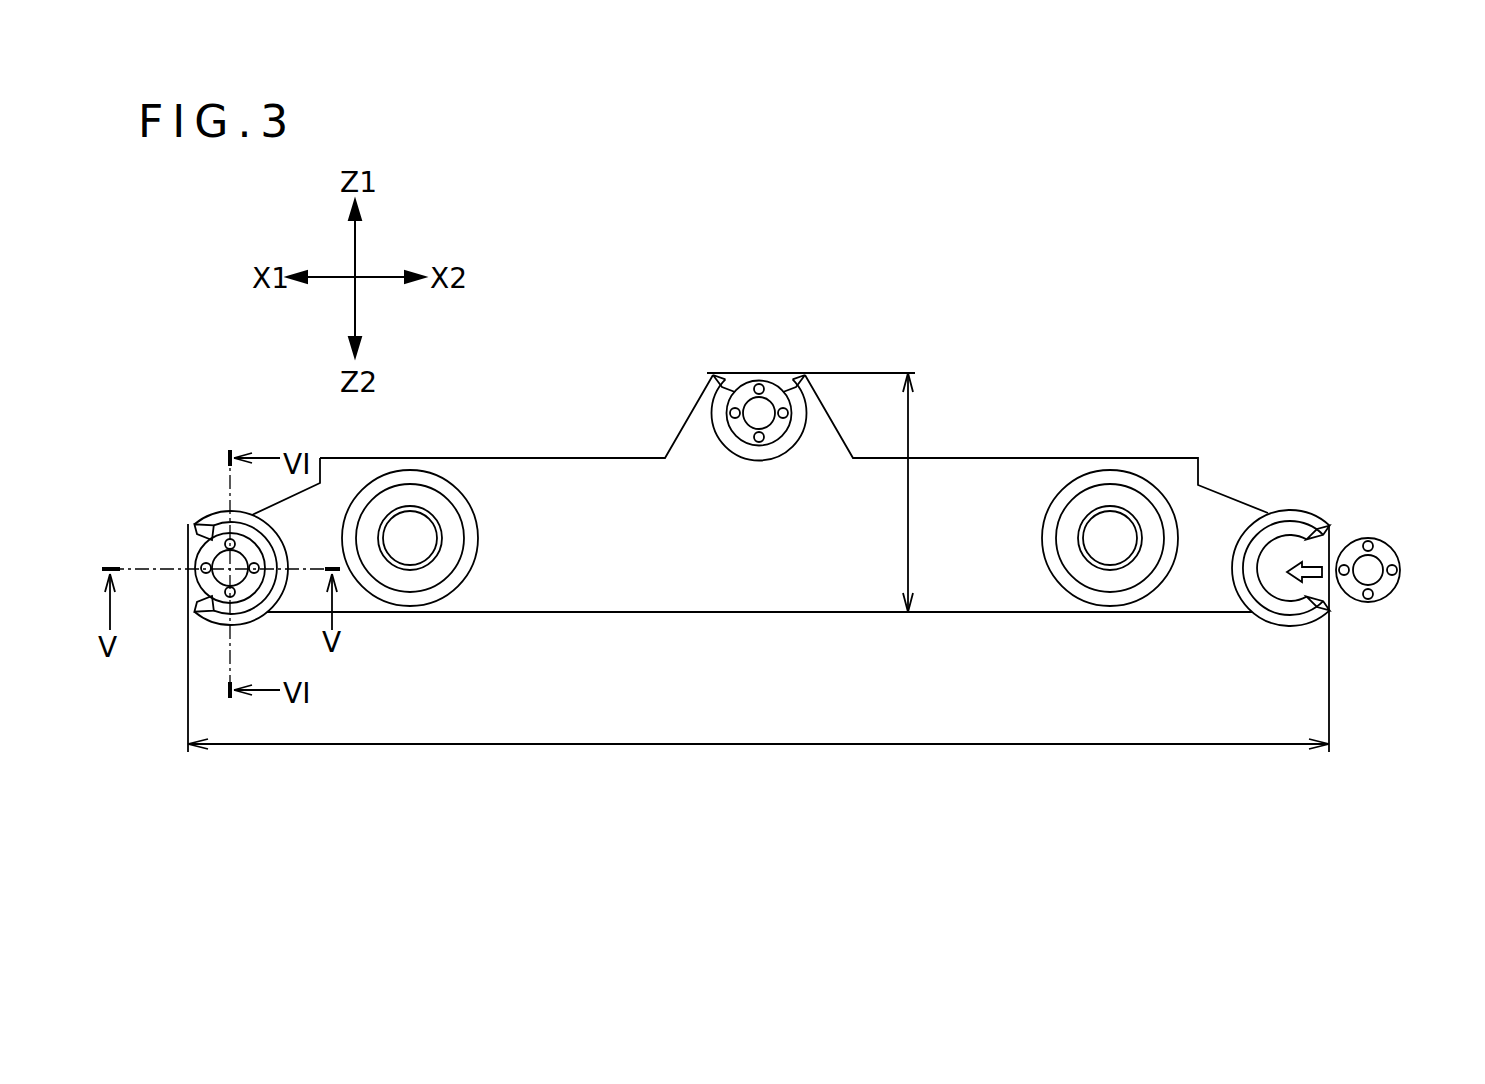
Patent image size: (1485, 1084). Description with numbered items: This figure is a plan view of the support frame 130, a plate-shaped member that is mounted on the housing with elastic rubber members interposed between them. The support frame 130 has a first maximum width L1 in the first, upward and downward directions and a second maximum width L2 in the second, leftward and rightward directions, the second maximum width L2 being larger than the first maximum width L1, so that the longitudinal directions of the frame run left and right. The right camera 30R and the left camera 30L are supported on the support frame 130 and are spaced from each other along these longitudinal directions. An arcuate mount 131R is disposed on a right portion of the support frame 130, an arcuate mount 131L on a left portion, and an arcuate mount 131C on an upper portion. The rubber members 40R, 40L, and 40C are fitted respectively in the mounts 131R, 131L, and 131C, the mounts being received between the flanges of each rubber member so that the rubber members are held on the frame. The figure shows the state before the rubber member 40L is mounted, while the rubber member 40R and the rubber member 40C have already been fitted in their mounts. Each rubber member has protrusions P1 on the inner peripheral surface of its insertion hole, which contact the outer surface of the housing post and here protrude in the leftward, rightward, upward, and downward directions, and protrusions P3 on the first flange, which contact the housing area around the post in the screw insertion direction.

The support frame 130 is at (998, 437).
The arcuate mount 131R is at (258, 596).
The arcuate mount 131C is at (723, 398).
The arcuate mount 131L is at (1286, 605).
The rubber member 40R is at (202, 587).
The rubber member 40C is at (759, 386).
The rubber member 40L is at (1397, 557).
The right camera 30R is at (415, 552).
The left camera 30L is at (1105, 550).
The protrusions P1 is at (220, 558).
The protrusions P3 is at (233, 545).
The first maximum width L1 is at (827, 492).
The second maximum width L2 is at (758, 760).